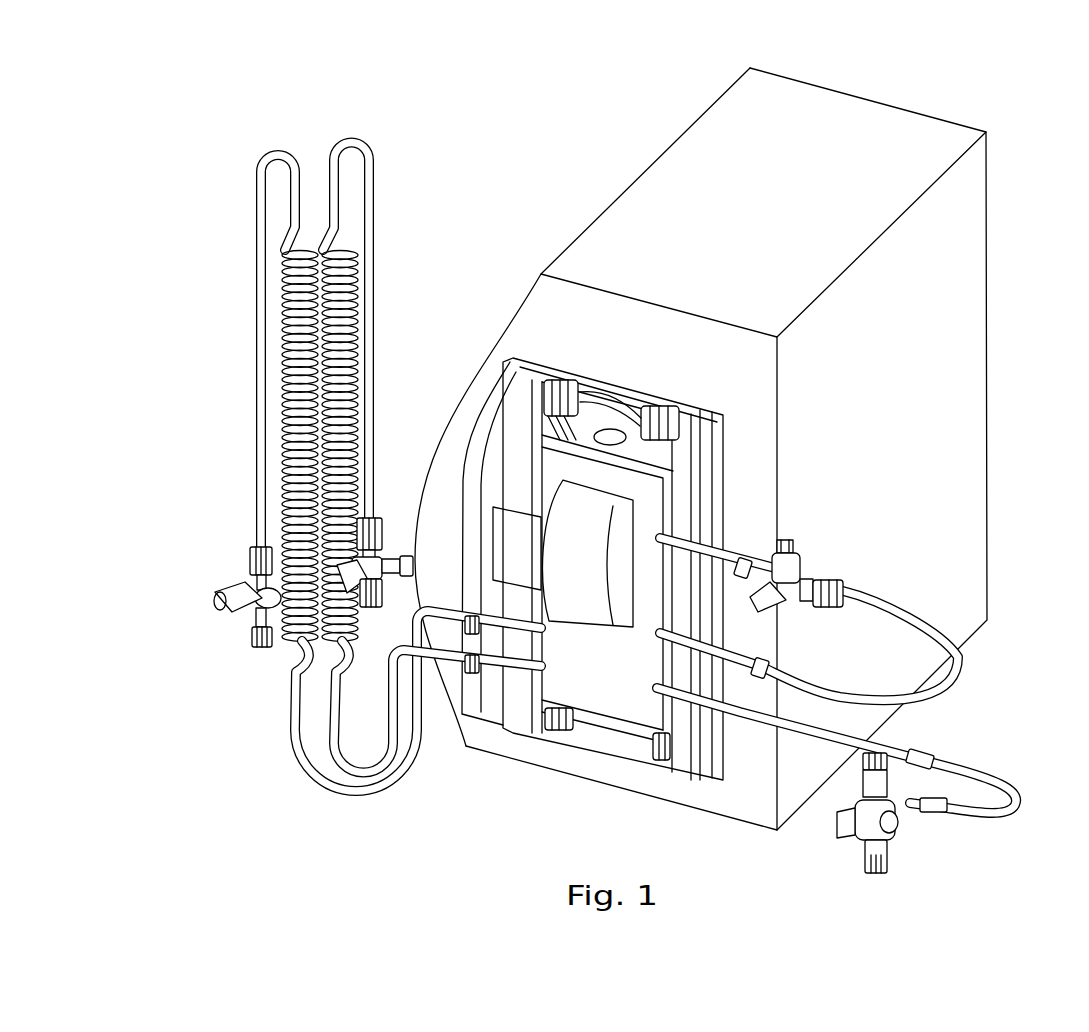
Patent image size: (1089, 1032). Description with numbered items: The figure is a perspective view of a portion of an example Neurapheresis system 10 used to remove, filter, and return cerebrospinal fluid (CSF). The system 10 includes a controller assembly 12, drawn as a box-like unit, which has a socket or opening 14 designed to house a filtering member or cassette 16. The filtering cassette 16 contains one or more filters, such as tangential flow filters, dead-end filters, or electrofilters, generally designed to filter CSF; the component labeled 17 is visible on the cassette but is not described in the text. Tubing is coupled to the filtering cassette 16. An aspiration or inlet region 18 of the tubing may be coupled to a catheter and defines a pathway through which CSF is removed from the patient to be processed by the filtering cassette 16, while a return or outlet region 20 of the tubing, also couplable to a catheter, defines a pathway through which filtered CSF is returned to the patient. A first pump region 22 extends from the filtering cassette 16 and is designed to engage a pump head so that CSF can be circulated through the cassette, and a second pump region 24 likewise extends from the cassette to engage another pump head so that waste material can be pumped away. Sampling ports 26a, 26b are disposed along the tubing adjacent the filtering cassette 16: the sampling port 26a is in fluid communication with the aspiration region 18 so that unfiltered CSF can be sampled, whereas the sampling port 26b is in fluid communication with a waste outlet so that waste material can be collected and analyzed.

The system 10 is at (388, 86).
The controller assembly 12 is at (862, 108).
The socket or opening 14 is at (724, 470).
The filtering cassette 16 is at (587, 633).
The cover 17 is at (603, 520).
The aspiration region 18 is at (246, 357).
The return region 20 is at (386, 211).
The first pump region 22 is at (955, 668).
The second pump region 24 is at (1008, 782).
The sampling port 26a is at (812, 562).
The sampling port 26b is at (905, 835).